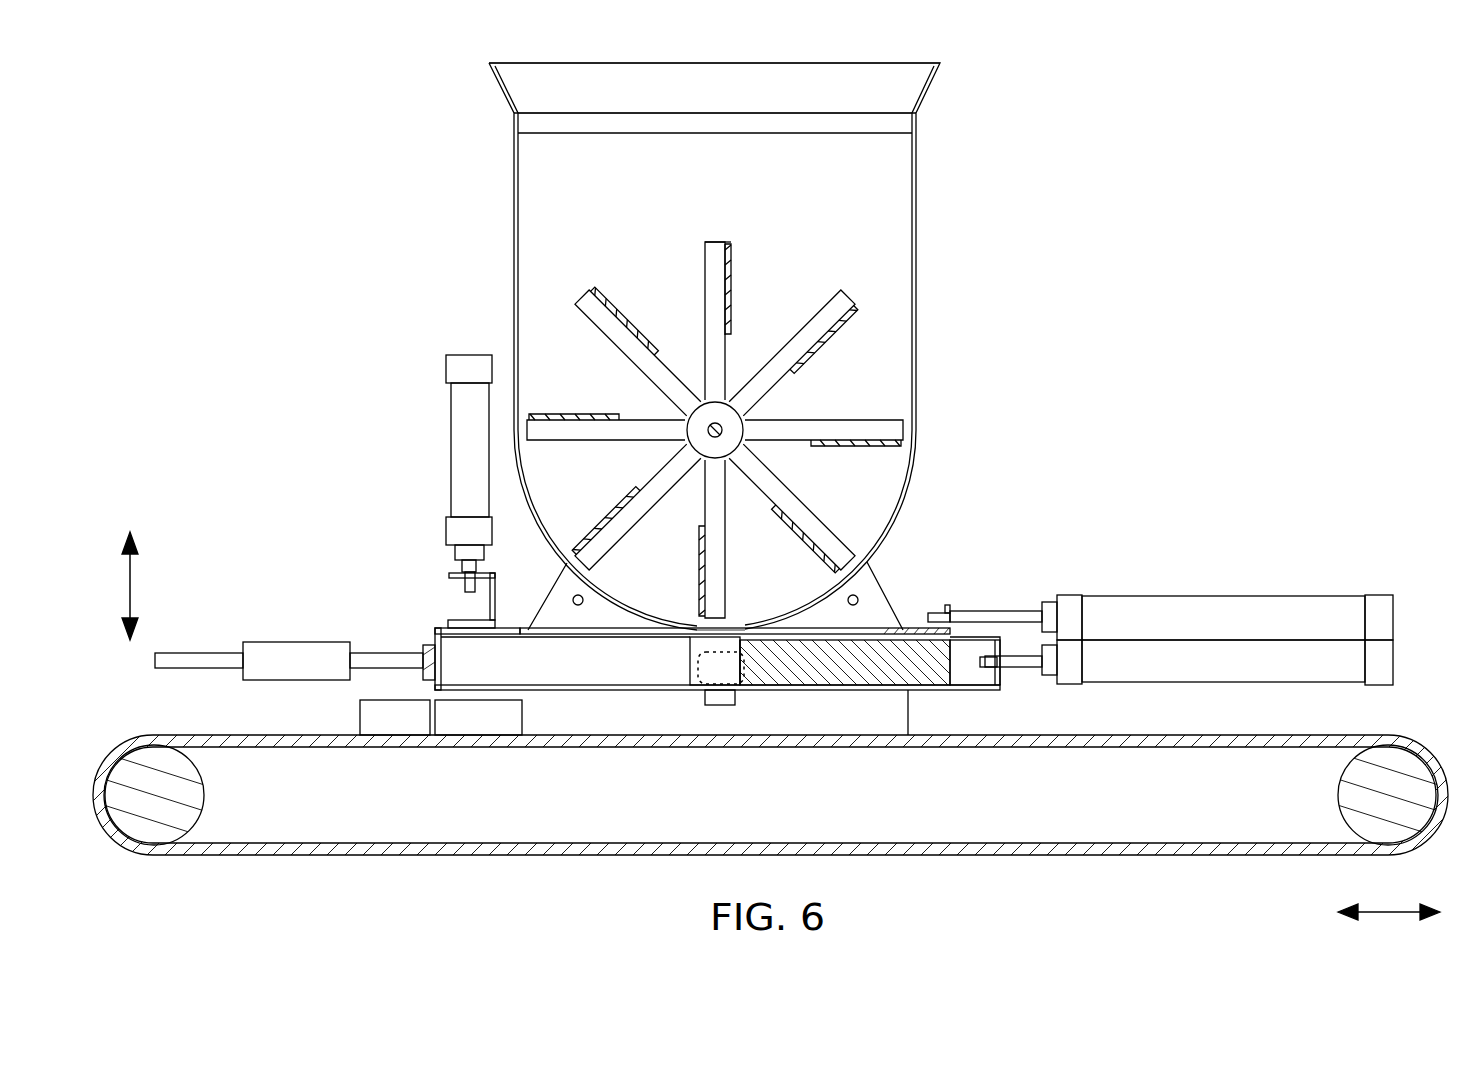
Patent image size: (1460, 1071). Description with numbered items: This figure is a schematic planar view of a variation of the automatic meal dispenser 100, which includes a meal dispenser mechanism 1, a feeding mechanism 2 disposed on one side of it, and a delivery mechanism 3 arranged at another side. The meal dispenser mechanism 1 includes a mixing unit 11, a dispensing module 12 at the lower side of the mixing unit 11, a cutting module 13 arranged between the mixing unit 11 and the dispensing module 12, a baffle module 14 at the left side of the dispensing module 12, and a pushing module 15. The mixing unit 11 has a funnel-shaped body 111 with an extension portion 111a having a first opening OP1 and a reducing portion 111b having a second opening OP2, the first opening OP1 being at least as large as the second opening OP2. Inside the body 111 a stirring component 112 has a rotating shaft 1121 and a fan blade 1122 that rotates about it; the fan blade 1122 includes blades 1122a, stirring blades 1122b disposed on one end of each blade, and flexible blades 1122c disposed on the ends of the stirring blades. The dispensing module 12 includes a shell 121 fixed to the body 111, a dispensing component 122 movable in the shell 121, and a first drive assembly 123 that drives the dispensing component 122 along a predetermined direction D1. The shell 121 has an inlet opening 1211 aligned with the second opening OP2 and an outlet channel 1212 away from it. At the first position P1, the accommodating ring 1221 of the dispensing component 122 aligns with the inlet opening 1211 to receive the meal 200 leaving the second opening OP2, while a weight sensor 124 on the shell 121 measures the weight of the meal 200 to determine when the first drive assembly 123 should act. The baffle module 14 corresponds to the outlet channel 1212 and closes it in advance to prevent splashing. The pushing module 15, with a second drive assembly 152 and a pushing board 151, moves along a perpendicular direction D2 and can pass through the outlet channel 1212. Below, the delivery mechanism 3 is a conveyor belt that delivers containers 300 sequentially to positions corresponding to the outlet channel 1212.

The automatic meal dispenser 100 is at (497, 200).
The meal dispenser mechanism 1 is at (515, 256).
The feeding mechanism 2 is at (932, 95).
The delivery mechanism 3 is at (1126, 856).
The mixing unit 11 is at (1108, 290).
The body 111 is at (1046, 390).
The extension portion 111a is at (918, 385).
The reducing portion 111b is at (930, 510).
The stirring component 112 is at (1046, 245).
The rotating shaft 1121 is at (732, 428).
The fan blade 1122 is at (838, 305).
The blades 1122a is at (712, 262).
The stirring blades 1122b is at (748, 272).
The flexible blades 1122c is at (728, 242).
The dispensing module 12 is at (1402, 40).
The shell 121 is at (553, 690).
The inlet opening 1211 is at (712, 636).
The outlet channel 1212 is at (483, 688).
The dispensing component 122 is at (860, 684).
The accommodating ring 1221 is at (742, 648).
The first drive assembly 123 is at (1232, 612).
The weight sensor 124 is at (723, 705).
The cutting module 13 is at (915, 628).
The baffle module 14 is at (452, 697).
The pushing module 15 is at (343, 485).
The pushing board 151 is at (460, 618).
The second drive assembly 152 is at (465, 487).
The meal 200 is at (700, 683).
The containers 300 is at (358, 722).
The first opening OP1 is at (567, 138).
The second opening OP2 is at (735, 625).
The first position P1 is at (965, 692).
The predetermined direction D1 is at (1389, 899).
The perpendicular direction D2 is at (111, 586).